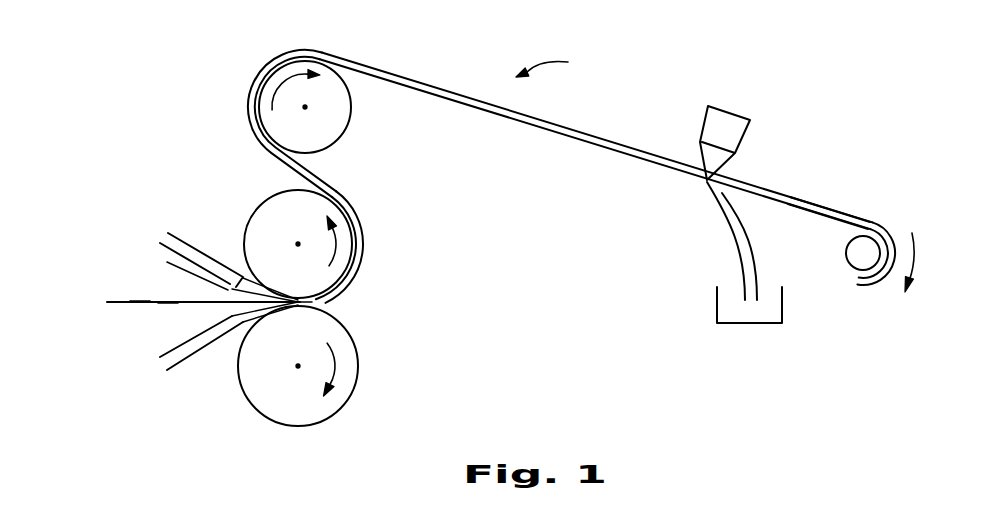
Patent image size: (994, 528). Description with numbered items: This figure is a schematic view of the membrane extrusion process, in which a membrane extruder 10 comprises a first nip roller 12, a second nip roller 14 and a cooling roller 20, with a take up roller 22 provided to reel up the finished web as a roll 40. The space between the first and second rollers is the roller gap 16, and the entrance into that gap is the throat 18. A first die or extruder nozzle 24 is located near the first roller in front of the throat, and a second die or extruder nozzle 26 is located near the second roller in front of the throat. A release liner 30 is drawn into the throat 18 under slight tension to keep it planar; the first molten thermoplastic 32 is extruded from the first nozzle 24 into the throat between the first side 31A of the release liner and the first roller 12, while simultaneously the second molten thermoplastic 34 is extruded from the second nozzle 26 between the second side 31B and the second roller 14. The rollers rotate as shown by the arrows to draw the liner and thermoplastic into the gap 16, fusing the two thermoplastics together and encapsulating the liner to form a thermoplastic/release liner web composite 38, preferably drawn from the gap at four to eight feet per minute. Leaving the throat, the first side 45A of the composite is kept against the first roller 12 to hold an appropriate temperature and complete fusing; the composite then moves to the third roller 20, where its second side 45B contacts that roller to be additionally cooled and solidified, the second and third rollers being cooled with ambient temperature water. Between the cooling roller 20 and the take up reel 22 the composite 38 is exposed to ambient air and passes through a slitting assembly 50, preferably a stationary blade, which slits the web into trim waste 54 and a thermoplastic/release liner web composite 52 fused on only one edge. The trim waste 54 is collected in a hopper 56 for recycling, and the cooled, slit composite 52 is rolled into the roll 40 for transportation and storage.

The membrane extruder 10 is at (560, 60).
The first nip roller 12 is at (346, 250).
The second nip roller 14 is at (352, 370).
The roller gap 16 is at (312, 301).
The throat 18 is at (250, 291).
The cooling roller 20 is at (340, 127).
The take up roller 22 is at (843, 257).
The first die or extruder nozzle 24 is at (187, 233).
The second die or extruder nozzle 26 is at (187, 360).
The release liner 30 is at (127, 304).
The first side of the release liner 31A is at (133, 301).
The second side of the release liner 31B is at (163, 304).
The first molten thermoplastic 32 is at (167, 262).
The second molten thermoplastic 34 is at (233, 308).
The thermoplastic/release liner web composite 38 is at (583, 135).
The roll 40 is at (862, 283).
The first side of the thermoplastic/release liner web composite 45A is at (353, 220).
The second side of the thermoplastic/release liner web composite 45B is at (277, 63).
The slitting assembly 50 is at (715, 122).
The thermoplastic/release liner web composite fused on only one edge 52 is at (810, 206).
The trim waste 54 is at (735, 233).
The hopper 56 is at (782, 310).